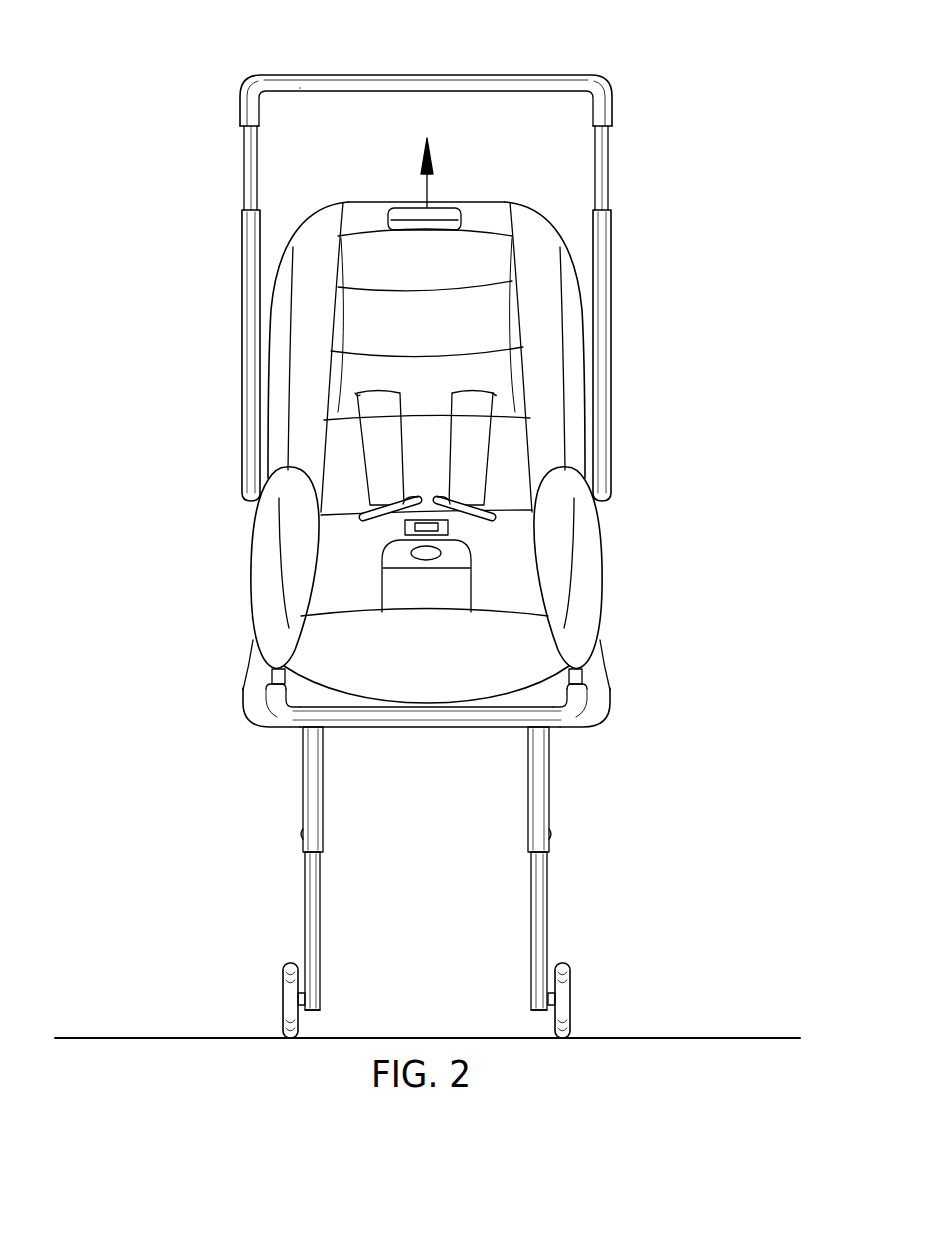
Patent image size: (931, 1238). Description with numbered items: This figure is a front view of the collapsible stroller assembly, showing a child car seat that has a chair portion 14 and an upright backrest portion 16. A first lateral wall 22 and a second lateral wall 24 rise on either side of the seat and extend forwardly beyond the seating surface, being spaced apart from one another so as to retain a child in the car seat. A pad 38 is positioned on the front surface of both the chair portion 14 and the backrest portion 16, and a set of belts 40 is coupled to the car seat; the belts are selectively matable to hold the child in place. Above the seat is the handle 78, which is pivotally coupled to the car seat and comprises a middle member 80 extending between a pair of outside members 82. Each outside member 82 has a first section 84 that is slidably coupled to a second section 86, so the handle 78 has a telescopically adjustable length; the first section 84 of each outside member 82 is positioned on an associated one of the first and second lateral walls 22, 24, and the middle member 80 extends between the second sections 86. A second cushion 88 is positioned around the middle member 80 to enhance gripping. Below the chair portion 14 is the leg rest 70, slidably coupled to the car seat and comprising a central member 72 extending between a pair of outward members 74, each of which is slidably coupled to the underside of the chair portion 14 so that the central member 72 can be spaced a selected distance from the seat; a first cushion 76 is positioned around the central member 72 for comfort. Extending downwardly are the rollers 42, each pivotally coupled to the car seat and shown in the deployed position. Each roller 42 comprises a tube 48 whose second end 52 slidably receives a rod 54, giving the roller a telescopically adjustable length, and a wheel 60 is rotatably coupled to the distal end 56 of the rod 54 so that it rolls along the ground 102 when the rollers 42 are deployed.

The chair portion 14 is at (578, 668).
The backrest portion 16 is at (540, 220).
The first lateral wall 22 is at (258, 525).
The second lateral wall 24 is at (588, 505).
The pad 38 is at (532, 450).
The set of belts 40 is at (385, 405).
The rollers 42 is at (428, 882).
The tube 48 is at (550, 785).
The second end 52 is at (540, 852).
The rod 54 is at (322, 958).
The distal end 56 is at (311, 1010).
The wheel 60 is at (290, 962).
The leg rest 70 is at (397, 712).
The central member 72 is at (443, 728).
The outward members 74 is at (271, 676).
The first cushion 76 is at (302, 718).
The handle 78 is at (425, 254).
The middle member 80 is at (560, 75).
The outside members 82 is at (425, 298).
The first section 84 is at (240, 410).
The second section 86 is at (247, 168).
The second cushion 88 is at (290, 88).
The ground surface 102 is at (700, 1035).